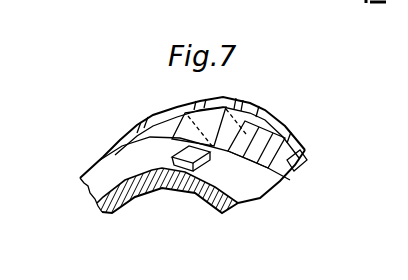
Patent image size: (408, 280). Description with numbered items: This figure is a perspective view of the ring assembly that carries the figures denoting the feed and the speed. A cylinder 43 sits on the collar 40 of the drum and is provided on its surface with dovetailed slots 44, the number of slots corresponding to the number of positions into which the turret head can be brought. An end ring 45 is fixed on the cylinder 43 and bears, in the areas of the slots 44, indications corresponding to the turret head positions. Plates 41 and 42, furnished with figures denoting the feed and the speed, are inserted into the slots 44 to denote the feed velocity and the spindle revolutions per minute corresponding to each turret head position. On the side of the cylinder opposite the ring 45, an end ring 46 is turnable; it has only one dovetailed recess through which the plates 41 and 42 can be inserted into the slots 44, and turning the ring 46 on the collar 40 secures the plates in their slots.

The collar 40 is at (229, 207).
The plate 41 is at (150, 134).
The plate 42 is at (193, 171).
The cylinder 43 is at (170, 118).
The dovetailed slots 44 is at (246, 124).
The end ring 45 is at (201, 118).
The end ring 46 is at (112, 181).